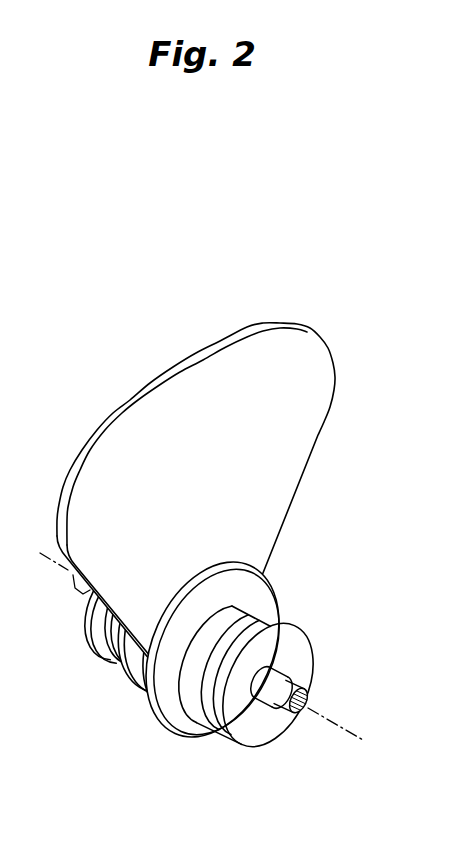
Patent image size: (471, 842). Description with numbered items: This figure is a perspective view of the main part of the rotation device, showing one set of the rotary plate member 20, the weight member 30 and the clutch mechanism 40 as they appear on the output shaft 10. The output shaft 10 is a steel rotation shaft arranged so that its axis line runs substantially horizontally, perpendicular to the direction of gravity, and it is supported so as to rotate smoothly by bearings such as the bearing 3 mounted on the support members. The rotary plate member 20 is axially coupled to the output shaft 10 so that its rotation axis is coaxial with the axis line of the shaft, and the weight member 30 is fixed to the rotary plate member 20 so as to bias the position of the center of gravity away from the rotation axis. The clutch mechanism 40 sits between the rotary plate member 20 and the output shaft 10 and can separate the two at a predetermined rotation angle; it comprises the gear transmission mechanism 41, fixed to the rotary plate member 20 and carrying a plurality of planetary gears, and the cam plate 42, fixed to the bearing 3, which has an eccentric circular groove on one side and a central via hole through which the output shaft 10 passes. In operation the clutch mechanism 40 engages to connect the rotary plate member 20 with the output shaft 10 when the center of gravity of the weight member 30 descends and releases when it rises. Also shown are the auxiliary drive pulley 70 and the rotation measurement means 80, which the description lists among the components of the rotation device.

The weight member 30 is at (195, 353).
The clutch mechanism 40 is at (286, 616).
The bearing 3 is at (300, 657).
The output shaft 10 is at (302, 713).
The gear transmission mechanism 41 is at (187, 697).
The cam plate 42 is at (217, 720).
The rotary plate member 20 is at (128, 698).
The auxiliary drive pulley 70 is at (115, 663).
The rotation measurement means 80 is at (82, 640).